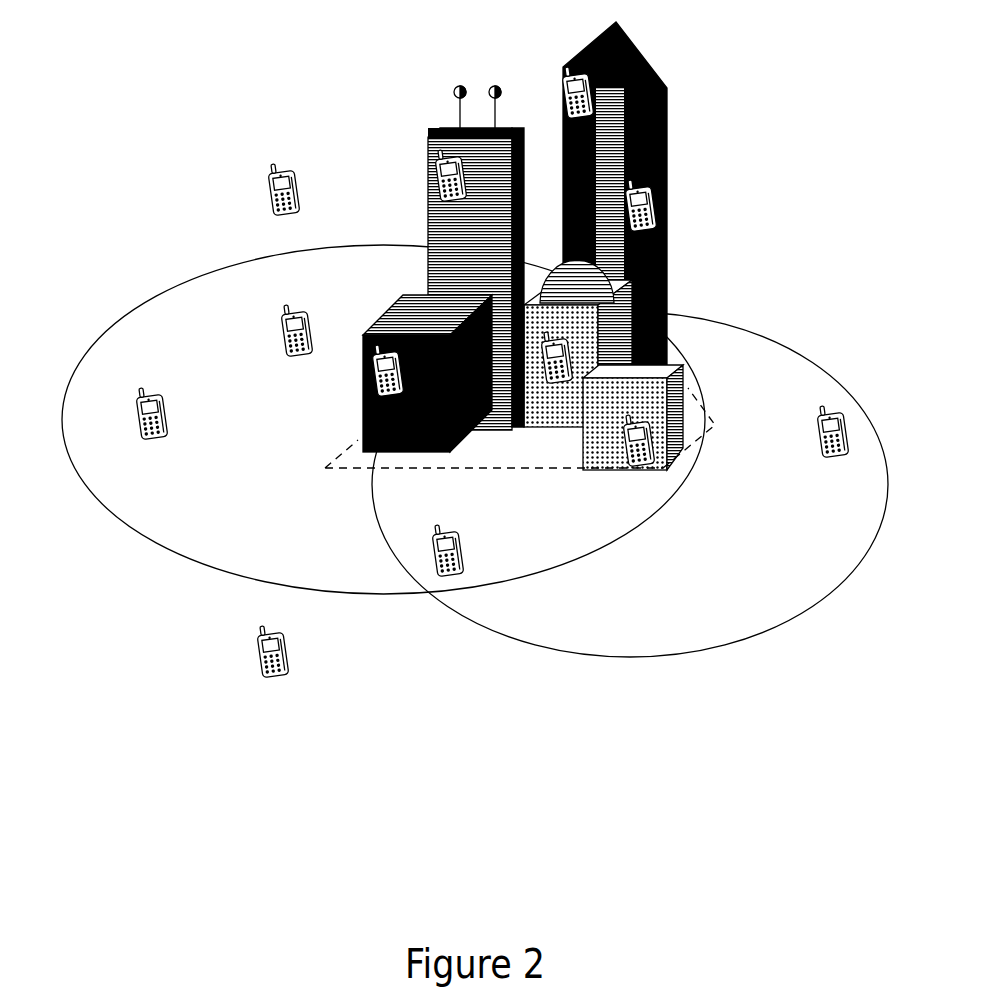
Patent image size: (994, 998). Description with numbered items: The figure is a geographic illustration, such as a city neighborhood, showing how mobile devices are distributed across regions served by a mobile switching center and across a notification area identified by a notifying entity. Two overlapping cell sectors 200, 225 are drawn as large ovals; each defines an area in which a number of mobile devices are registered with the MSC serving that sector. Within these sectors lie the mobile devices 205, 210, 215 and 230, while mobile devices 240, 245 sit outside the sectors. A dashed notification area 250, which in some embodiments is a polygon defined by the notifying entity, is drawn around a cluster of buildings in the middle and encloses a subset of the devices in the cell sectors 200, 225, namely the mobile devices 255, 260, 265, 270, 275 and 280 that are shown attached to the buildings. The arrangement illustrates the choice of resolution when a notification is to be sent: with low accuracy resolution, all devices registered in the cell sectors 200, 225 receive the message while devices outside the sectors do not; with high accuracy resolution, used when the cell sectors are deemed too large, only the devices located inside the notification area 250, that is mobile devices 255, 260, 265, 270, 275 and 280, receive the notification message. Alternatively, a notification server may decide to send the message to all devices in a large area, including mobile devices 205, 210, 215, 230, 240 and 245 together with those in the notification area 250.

The cell sector 200 is at (75, 372).
The cell sector 225 is at (848, 388).
The notification area 250 is at (325, 468).
The mobile device 205 is at (137, 418).
The mobile device 210 is at (282, 335).
The mobile device 215 is at (433, 555).
The mobile device 230 is at (820, 436).
The mobile device 240 is at (268, 193).
The mobile device 245 is at (257, 655).
The mobile device 255 is at (374, 375).
The mobile device 260 is at (657, 210).
The mobile device 265 is at (625, 445).
The mobile device 270 is at (543, 362).
The mobile device 275 is at (437, 180).
The mobile device 280 is at (565, 97).